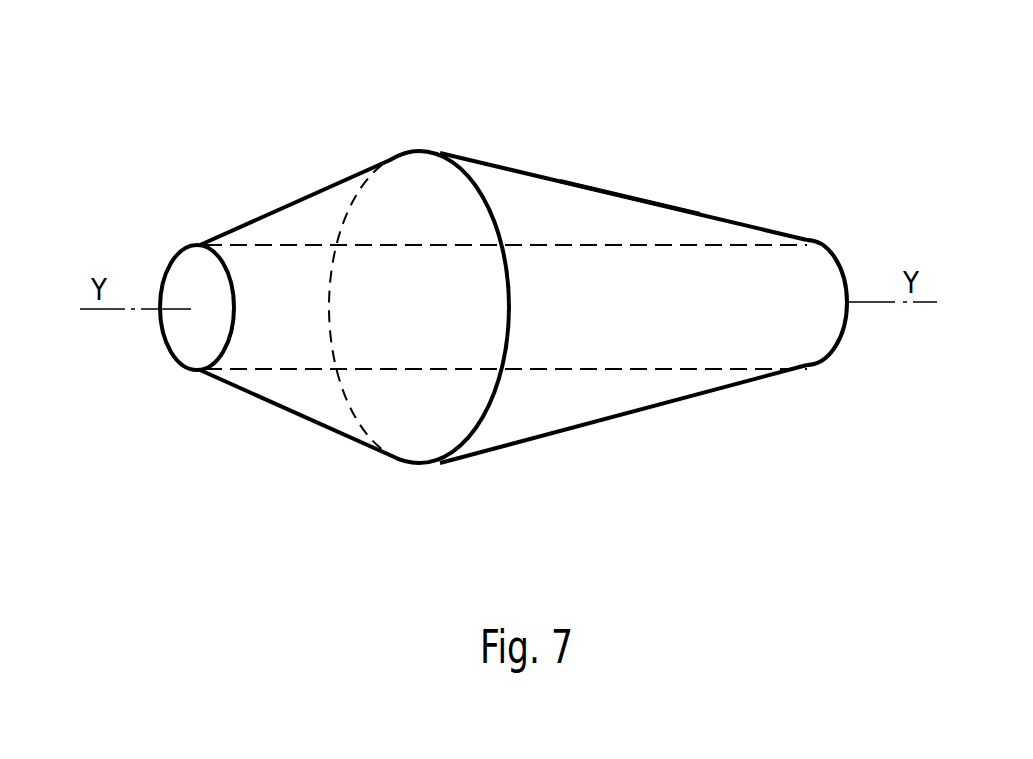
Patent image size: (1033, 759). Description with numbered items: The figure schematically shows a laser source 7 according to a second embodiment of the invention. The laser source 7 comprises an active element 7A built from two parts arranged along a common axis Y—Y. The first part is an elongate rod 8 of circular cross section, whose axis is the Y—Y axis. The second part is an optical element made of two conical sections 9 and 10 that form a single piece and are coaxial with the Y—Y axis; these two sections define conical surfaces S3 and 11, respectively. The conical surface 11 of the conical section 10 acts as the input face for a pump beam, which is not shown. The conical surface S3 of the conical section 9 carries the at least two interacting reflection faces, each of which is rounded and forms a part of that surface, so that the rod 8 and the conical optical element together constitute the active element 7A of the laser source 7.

The laser source 7 is at (511, 296).
The active element 7A is at (455, 157).
The elongate rod 8 is at (760, 355).
The conical section 9 is at (578, 210).
The conical section 10 is at (323, 200).
The conical surface 11 is at (310, 430).
The conical surface S3 is at (733, 216).